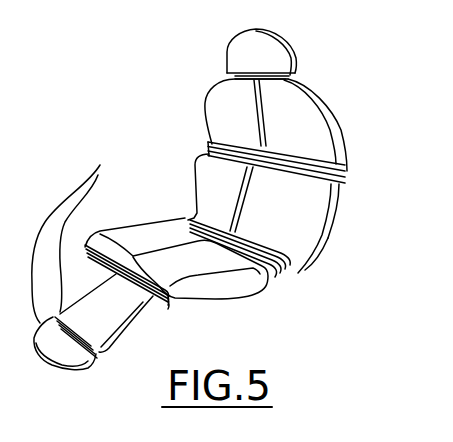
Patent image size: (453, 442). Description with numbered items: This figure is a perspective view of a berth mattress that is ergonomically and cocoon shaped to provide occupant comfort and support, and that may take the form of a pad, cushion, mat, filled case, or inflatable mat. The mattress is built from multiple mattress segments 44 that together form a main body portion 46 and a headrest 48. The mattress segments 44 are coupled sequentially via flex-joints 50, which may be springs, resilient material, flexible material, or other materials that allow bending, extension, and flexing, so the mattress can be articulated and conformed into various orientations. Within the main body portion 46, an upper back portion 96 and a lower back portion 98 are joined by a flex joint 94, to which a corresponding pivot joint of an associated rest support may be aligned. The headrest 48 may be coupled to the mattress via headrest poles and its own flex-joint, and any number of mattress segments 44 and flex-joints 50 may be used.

The mattress segments 44 is at (205, 108).
The main body portion 46 is at (332, 218).
The headrest 48 is at (225, 49).
The flex-joints 50 is at (345, 167).
The flex joint 94 is at (340, 183).
The upper back portion 96 is at (328, 101).
The lower back portion 98 is at (327, 235).